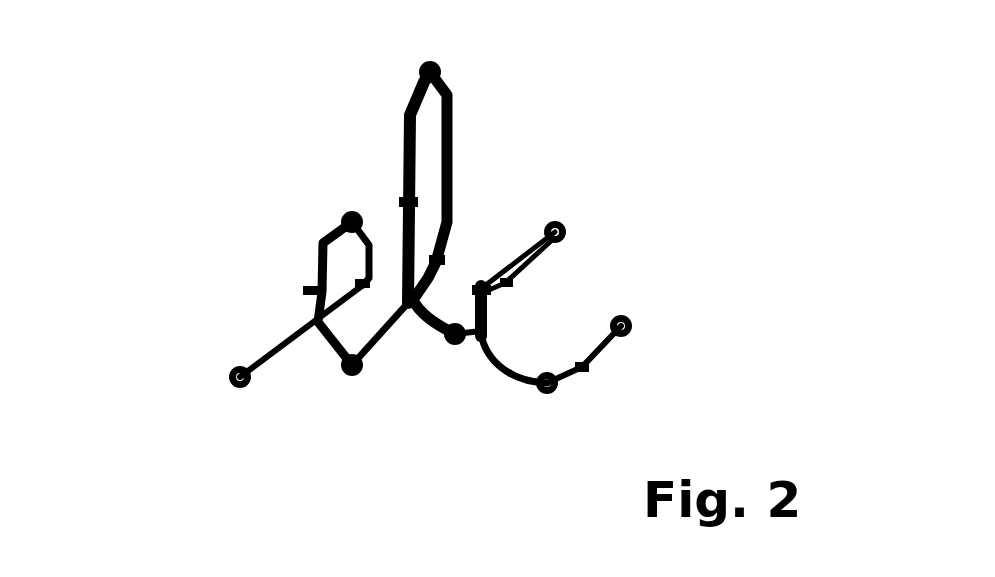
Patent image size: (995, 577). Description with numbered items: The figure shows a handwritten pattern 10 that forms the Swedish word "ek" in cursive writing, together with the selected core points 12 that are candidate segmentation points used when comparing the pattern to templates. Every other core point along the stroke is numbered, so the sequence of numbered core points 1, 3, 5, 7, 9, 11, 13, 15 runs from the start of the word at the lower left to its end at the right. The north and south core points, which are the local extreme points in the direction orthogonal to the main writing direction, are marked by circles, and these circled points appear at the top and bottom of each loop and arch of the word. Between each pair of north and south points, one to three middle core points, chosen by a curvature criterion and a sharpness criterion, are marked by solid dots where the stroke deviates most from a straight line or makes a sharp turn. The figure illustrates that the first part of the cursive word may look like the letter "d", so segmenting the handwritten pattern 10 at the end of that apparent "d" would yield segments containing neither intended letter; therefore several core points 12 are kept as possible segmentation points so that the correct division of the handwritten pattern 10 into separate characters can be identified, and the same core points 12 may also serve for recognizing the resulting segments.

The handwritten pattern 10 is at (198, 153).
The core points 12 is at (310, 291).
The node 1 is at (155, 268).
The node 3 is at (345, 196).
The node 5 is at (357, 400).
The node 7 is at (456, 75).
The node 9 is at (456, 369).
The node 11 is at (558, 204).
The node 13 is at (566, 414).
The node 15 is at (640, 301).